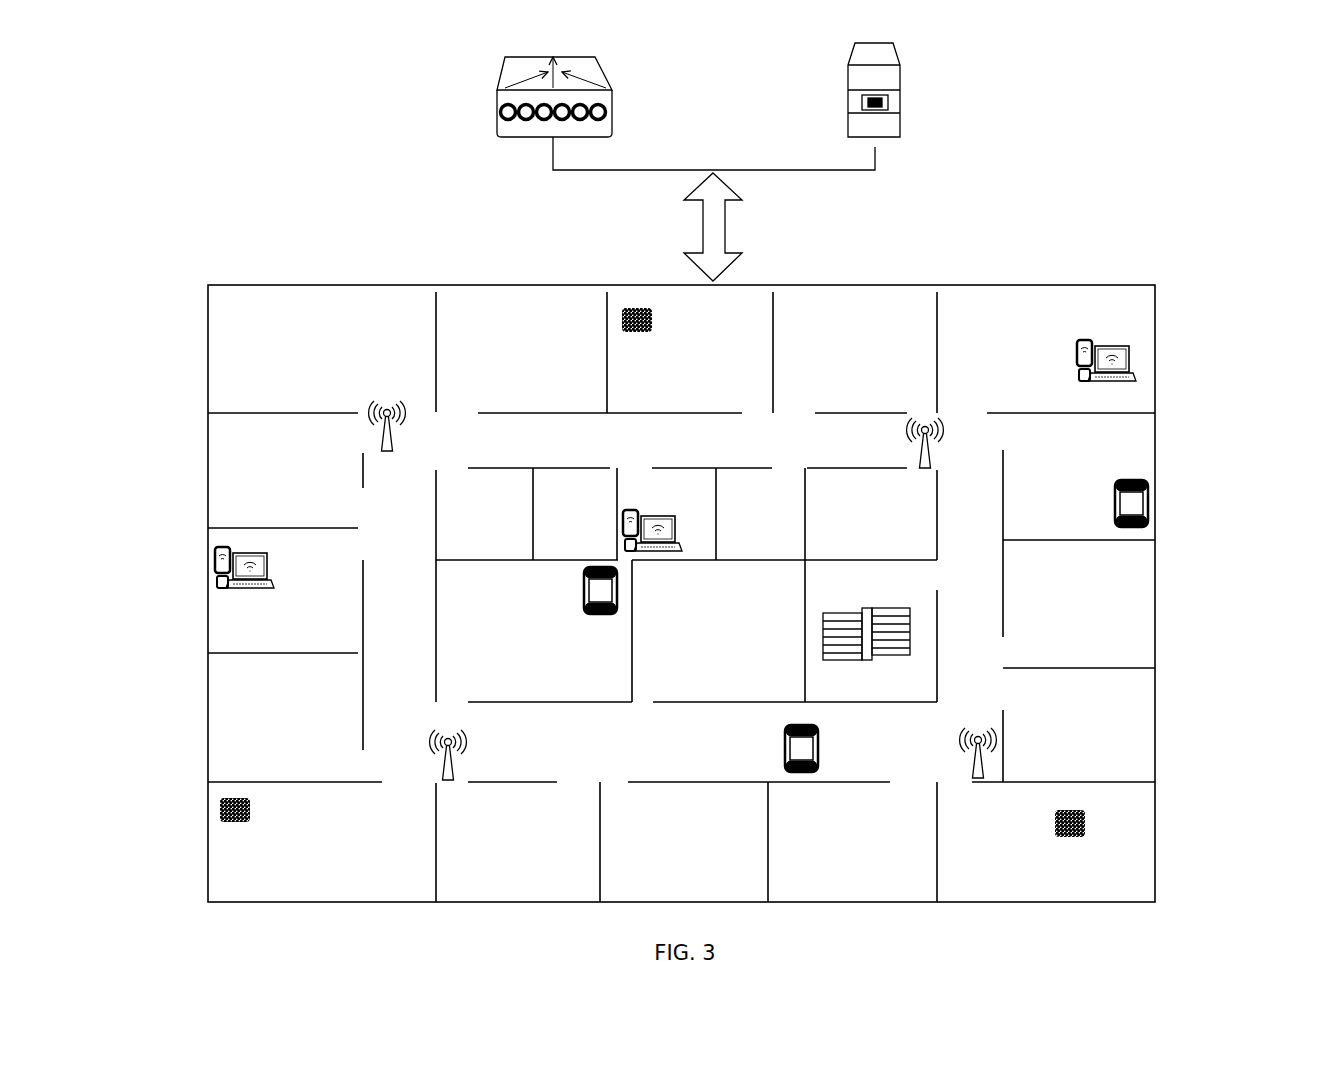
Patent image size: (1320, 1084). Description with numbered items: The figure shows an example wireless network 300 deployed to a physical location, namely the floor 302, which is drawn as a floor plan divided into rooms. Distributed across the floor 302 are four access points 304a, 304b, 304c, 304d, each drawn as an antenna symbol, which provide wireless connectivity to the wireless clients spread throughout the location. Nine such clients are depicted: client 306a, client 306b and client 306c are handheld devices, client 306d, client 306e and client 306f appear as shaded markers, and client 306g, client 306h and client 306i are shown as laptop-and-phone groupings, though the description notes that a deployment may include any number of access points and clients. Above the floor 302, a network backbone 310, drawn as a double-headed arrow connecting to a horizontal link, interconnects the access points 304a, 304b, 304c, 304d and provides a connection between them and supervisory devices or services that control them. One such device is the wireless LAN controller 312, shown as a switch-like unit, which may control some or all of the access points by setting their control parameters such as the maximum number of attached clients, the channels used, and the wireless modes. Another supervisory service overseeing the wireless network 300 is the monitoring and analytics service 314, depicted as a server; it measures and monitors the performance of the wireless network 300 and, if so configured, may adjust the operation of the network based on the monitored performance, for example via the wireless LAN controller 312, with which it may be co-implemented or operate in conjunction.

The wireless network 300 is at (1215, 115).
The floor 302 is at (217, 912).
The access point 304a is at (358, 395).
The access point 304b is at (945, 448).
The access point 304c is at (420, 730).
The access point 304d is at (970, 718).
The wireless client 306a is at (822, 750).
The wireless client 306b is at (597, 627).
The wireless client 306c is at (1100, 493).
The wireless client 306d is at (652, 348).
The wireless client 306e is at (248, 835).
The wireless client 306f is at (1063, 847).
The wireless client 306g is at (242, 598).
The wireless client 306h is at (690, 537).
The wireless client 306i is at (1068, 360).
The network backbone 310 is at (690, 228).
The wireless LAN controller 312 is at (485, 89).
The monitoring and analytics service 314 is at (893, 150).